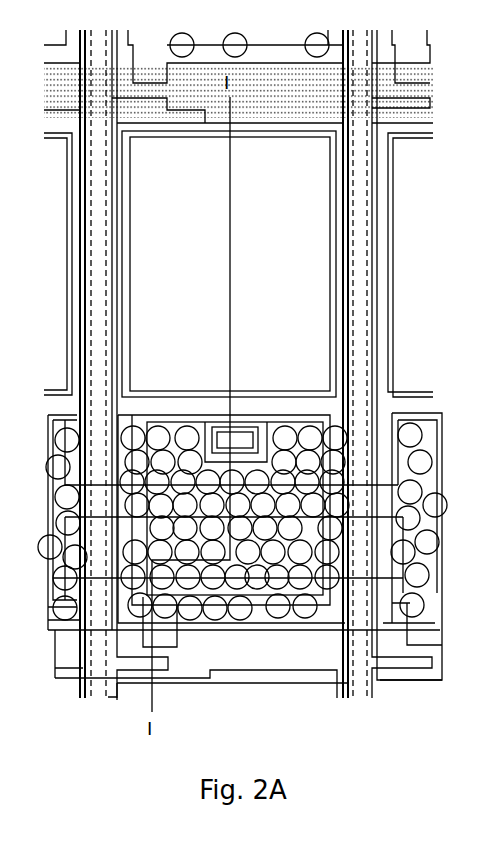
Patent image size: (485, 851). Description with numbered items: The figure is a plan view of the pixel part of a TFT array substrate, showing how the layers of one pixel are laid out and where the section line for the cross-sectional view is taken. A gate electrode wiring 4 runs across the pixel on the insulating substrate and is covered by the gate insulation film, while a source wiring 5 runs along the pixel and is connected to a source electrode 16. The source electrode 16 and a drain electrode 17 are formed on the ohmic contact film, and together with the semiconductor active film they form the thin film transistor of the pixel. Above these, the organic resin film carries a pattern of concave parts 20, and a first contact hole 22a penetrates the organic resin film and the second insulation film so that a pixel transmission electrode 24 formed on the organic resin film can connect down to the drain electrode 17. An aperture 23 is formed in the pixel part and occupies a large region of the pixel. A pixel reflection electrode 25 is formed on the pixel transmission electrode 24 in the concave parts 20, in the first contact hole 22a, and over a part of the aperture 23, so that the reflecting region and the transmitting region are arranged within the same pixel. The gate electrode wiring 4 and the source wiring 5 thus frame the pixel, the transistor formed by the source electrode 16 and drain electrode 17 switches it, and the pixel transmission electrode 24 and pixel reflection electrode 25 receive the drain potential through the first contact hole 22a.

The gate electrode wiring 4 is at (322, 655).
The source wiring 5 is at (375, 285).
The source electrode 16 is at (134, 663).
The drain electrode 17 is at (175, 645).
The concave parts 20 is at (345, 432).
The first contact hole 22a is at (243, 435).
The aperture 23 is at (305, 200).
The pixel transmission electrode 24 is at (117, 205).
The pixel reflection electrode 25 is at (262, 623).